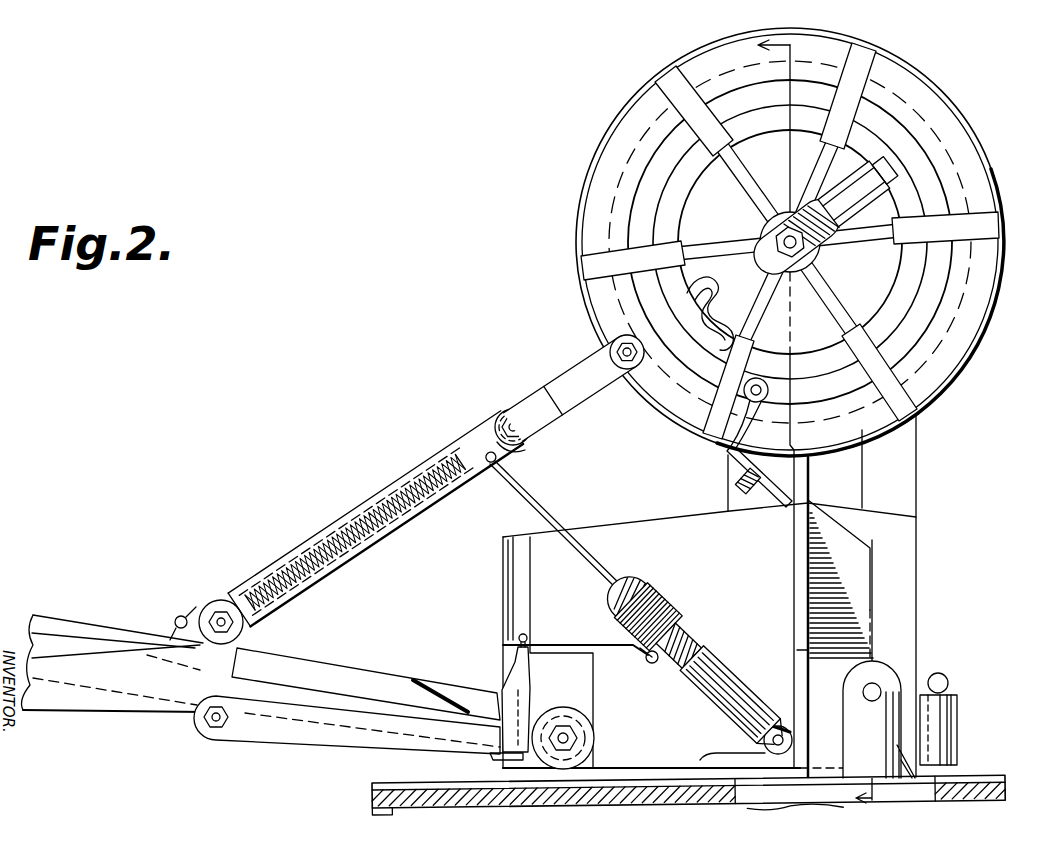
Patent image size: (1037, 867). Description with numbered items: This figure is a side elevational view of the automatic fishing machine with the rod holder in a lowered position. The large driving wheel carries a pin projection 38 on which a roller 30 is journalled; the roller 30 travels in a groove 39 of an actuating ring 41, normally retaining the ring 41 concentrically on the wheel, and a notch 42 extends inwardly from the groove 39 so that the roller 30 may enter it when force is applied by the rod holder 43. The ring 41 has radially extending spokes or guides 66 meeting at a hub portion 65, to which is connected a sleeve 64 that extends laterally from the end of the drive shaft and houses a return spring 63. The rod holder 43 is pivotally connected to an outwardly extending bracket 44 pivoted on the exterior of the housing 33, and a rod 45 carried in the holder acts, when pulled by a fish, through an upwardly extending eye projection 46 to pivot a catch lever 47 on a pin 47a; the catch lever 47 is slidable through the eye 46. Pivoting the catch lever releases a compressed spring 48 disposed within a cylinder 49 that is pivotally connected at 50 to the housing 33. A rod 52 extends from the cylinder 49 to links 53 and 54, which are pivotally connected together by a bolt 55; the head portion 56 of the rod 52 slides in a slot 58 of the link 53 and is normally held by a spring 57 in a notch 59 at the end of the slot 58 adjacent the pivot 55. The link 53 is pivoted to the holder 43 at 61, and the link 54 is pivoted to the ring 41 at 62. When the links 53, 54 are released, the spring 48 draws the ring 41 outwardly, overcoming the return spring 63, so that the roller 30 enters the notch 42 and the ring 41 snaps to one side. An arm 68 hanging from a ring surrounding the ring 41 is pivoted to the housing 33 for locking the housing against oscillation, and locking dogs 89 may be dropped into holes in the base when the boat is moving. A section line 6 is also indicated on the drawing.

The section line 6- 6 is at (824, 424).
The roller 30 is at (770, 384).
The housing 33 is at (918, 568).
The pin projection 38 is at (726, 458).
The groove 39 is at (600, 195).
The actuating ring 41 is at (604, 151).
The notch 42 is at (713, 292).
The rod holder 43 is at (146, 660).
The bracket 44 is at (312, 746).
The rod 45 is at (458, 690).
The eye projection 46 is at (516, 654).
The catch lever 47 is at (562, 644).
The pin 47a is at (650, 664).
The compressed spring 48 is at (666, 606).
The cylinder 49 is at (750, 682).
The pivotal connection 50 is at (720, 757).
The rod 52 is at (560, 505).
The link 53 is at (364, 501).
The link 54 is at (531, 401).
The bolt 55 is at (497, 418).
The head portion 56 is at (481, 487).
The spring 57 is at (373, 559).
The slot 58 is at (344, 509).
The notch 59 is at (526, 450).
The pivotal connection 61 is at (224, 600).
The pivotal connection 62 is at (628, 372).
The return spring 63 is at (818, 261).
The sleeve 64 is at (851, 178).
The hub portion 65 is at (749, 233).
The spokes 66 is at (586, 270).
The arm 68 is at (772, 500).
The locking dogs 89 is at (941, 680).